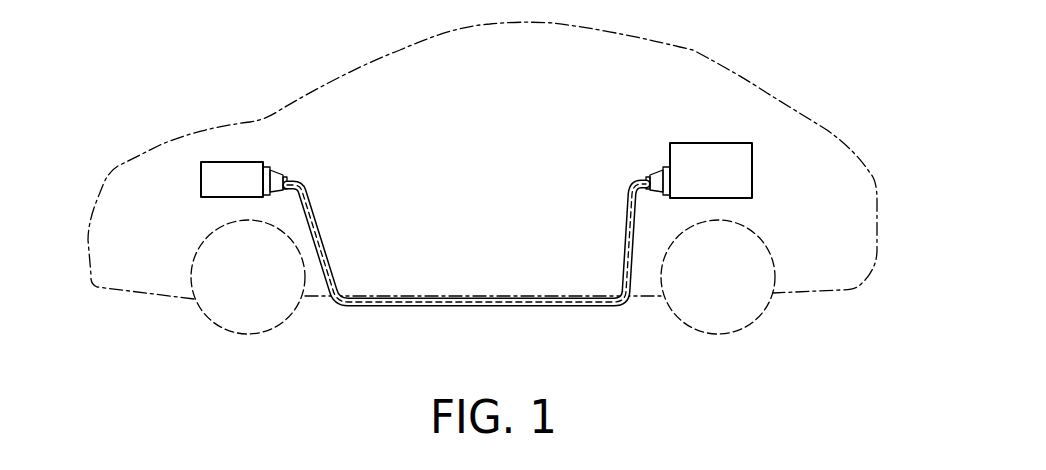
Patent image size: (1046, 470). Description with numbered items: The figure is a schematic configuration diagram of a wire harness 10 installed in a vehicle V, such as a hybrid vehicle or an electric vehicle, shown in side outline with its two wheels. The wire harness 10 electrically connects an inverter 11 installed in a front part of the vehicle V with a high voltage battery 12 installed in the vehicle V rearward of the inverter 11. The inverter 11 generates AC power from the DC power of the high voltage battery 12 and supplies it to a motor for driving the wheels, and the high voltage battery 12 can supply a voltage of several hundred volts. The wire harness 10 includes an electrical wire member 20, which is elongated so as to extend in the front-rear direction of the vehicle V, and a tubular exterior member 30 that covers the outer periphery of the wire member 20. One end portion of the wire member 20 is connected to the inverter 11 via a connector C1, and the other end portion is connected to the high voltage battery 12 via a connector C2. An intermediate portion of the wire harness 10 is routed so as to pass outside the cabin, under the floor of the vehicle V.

The vehicle V is at (693, 50).
The wire harness 10 is at (610, 113).
The inverter 11 is at (233, 162).
The high voltage battery 12 is at (707, 143).
The connector C1 is at (266, 178).
The connector C2 is at (660, 167).
The electrical wire member 20 is at (322, 245).
The exterior member 30 is at (310, 201).